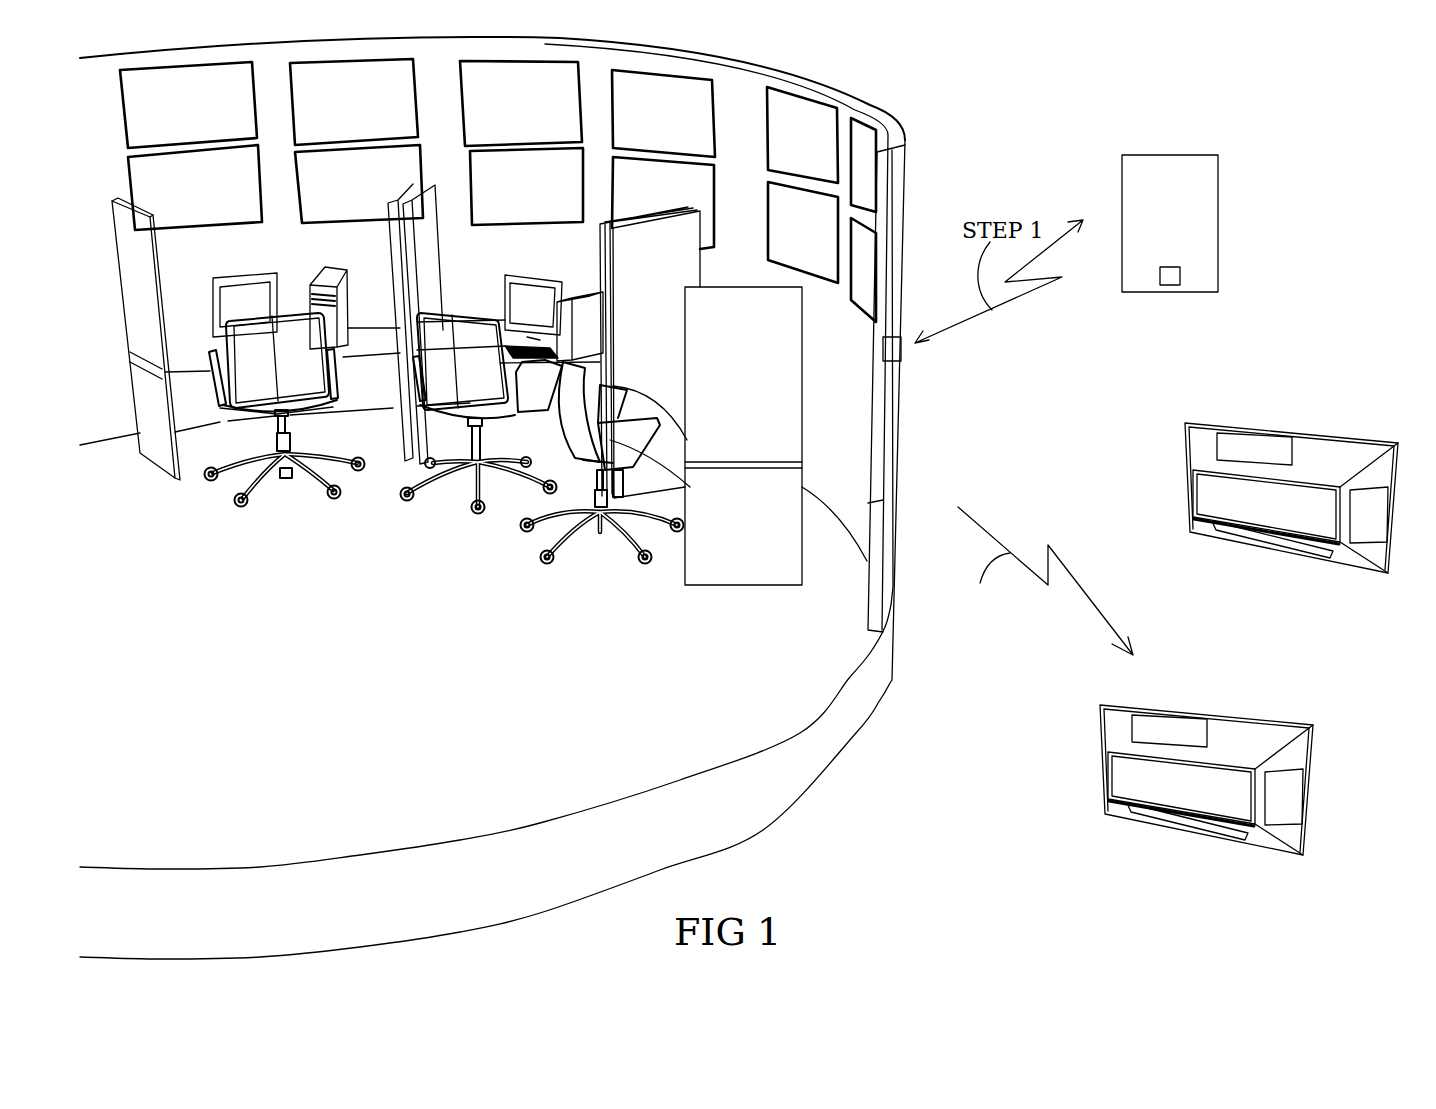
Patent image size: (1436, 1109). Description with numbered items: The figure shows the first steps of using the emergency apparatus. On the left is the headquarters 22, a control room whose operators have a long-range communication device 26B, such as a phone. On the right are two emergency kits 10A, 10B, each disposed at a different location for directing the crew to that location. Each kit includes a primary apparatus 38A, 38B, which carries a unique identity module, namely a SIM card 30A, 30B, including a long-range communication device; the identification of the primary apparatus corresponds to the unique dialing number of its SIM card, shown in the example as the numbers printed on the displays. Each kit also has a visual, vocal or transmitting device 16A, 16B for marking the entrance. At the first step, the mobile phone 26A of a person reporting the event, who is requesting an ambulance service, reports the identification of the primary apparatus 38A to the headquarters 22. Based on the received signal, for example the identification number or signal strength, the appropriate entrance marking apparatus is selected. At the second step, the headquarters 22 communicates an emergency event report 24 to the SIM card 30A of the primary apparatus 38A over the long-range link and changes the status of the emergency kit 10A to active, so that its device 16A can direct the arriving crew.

The headquarters 22 is at (935, 190).
The emergency event report 24 is at (1036, 578).
The mobile phone 26A is at (1192, 195).
The long-range communication device 26B is at (892, 347).
The emergency kit 10B is at (1272, 491).
The emergency kit 10A is at (1188, 773).
The unique identity module 30B is at (1227, 445).
The subscriber identity module 30A is at (1115, 727).
The primary apparatus 38B is at (1313, 455).
The primary apparatus 38A is at (1206, 752).
The visual/vocal/transmitting device 16B is at (1370, 515).
The visual/vocal/transmitting device 16A is at (1309, 835).